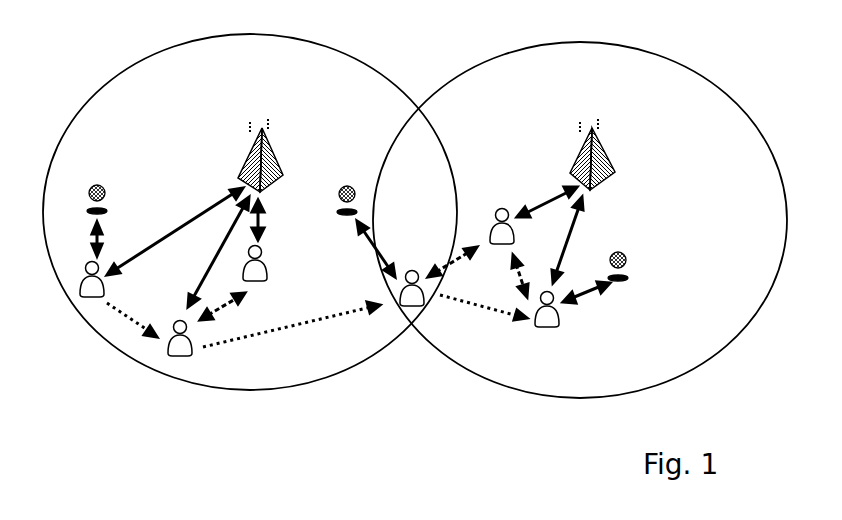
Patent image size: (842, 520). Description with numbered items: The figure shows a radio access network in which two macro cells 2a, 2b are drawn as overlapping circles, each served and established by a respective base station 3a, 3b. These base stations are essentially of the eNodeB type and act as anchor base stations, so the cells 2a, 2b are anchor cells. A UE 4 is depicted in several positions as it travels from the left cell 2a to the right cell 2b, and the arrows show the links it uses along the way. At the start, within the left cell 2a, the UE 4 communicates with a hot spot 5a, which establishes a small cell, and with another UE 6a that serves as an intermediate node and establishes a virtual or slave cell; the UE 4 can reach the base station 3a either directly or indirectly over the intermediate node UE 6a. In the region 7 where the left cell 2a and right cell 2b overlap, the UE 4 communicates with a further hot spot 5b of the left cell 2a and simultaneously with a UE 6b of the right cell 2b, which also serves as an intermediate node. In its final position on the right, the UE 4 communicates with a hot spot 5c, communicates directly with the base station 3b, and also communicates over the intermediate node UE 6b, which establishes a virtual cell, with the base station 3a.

The left macro cell 2a is at (150, 53).
The right macro cell 2b is at (557, 43).
The base station 3a is at (245, 153).
The base station 3b is at (582, 147).
The user equipment 4 is at (88, 287).
The hot spot 5a is at (97, 185).
The hot spot 5b is at (349, 186).
The hot spot 5c is at (622, 252).
The intermediate node UE 6a is at (270, 262).
The intermediate node UE 6b is at (503, 208).
The overlap region 7 is at (412, 76).